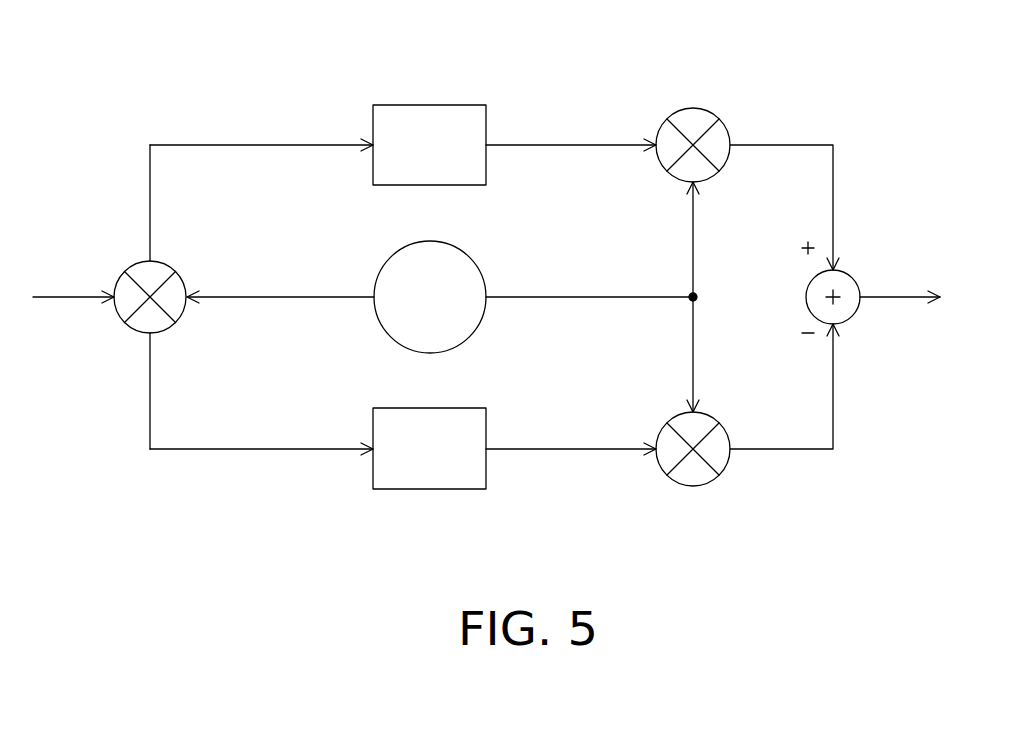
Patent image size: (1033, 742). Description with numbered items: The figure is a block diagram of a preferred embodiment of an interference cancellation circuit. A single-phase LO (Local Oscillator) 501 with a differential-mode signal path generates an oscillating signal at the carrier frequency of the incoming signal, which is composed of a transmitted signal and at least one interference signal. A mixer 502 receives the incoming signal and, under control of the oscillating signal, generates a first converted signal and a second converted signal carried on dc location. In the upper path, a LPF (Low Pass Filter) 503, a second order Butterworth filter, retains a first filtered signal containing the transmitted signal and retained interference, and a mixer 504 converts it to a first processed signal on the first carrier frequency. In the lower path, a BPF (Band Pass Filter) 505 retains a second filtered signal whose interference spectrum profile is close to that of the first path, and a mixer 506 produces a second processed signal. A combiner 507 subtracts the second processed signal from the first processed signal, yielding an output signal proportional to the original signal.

The LO (Local Oscillator) 501 is at (380, 272).
The mixer 502 is at (134, 262).
The LPF (Low Pass Filter) 503 is at (428, 105).
The mixer 504 is at (692, 108).
The BPF (Band Pass Filter) 505 is at (430, 490).
The mixer 506 is at (728, 462).
The combiner 507 is at (855, 275).